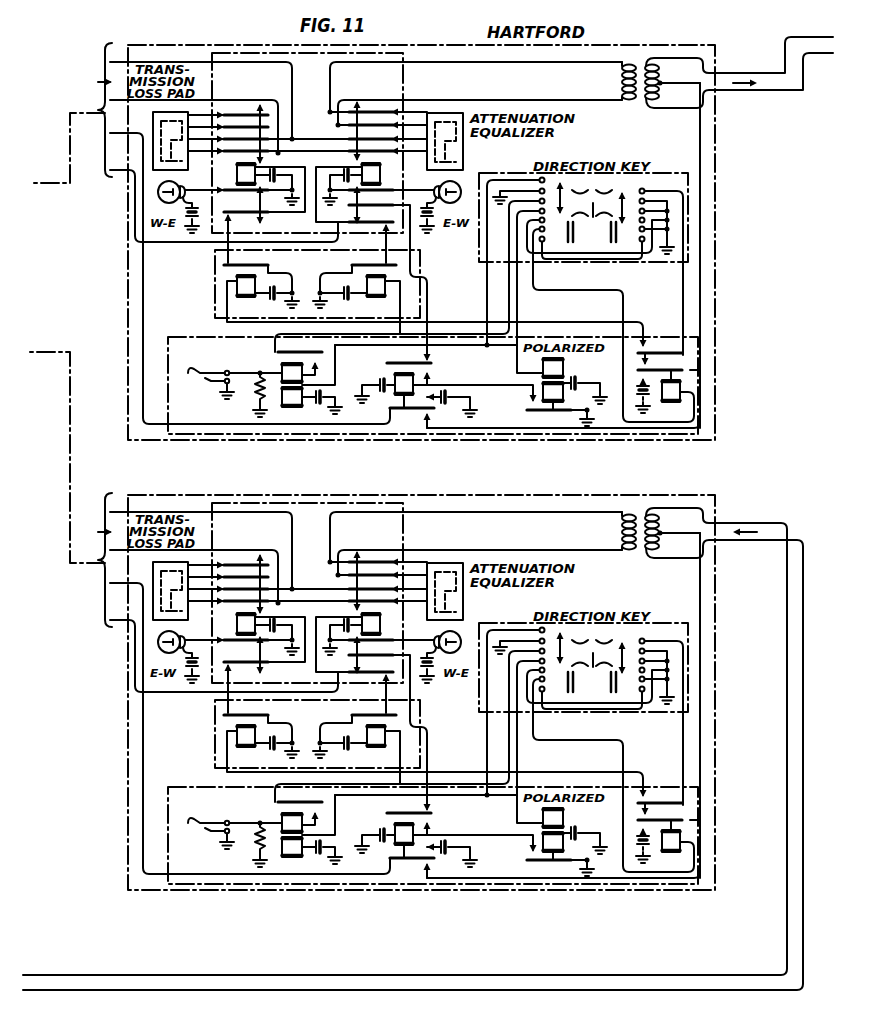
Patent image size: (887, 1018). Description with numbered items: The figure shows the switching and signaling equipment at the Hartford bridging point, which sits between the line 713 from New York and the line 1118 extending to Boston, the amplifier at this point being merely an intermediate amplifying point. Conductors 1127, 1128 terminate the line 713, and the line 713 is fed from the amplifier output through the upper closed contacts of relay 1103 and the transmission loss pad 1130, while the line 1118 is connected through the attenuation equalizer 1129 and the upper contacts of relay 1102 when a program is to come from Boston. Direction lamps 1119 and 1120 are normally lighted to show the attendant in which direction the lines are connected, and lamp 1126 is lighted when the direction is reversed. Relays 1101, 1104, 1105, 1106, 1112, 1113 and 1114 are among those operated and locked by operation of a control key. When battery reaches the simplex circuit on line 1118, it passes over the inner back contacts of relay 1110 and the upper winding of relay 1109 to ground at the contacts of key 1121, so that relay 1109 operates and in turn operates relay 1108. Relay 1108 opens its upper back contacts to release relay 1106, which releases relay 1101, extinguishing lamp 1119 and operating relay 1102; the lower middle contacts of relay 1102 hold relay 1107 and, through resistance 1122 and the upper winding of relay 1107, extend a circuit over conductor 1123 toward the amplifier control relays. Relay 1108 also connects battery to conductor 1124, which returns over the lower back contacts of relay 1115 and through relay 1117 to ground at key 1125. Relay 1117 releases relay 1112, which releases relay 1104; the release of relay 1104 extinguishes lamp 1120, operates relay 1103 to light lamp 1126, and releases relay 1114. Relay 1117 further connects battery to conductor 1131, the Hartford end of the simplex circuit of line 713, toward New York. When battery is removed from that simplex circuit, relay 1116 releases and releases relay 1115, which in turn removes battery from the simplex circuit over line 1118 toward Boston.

The line 713 is at (772, 531).
The relay 1101 is at (240, 170).
The relay 1102 is at (378, 170).
The relay 1103 is at (240, 620).
The relay 1104 is at (378, 620).
The relay 1105 is at (246, 293).
The relay 1106 is at (376, 293).
The relay 1107 is at (282, 366).
The relay 1108 is at (395, 378).
The relay 1109 is at (553, 398).
The relay 1110 is at (664, 398).
The relay 1112 is at (246, 743).
The relay 1113 is at (376, 743).
The relay 1114 is at (282, 816).
The relay 1115 is at (395, 828).
The relay 1116 is at (543, 840).
The relay 1117 is at (664, 848).
The line 1118 is at (782, 85).
The direction lamp 1119 is at (158, 193).
The direction lamp 1120 is at (464, 634).
The key 1121 is at (592, 210).
The resistance 1122 is at (255, 396).
The conductor 1123 is at (157, 243).
The conductor 1124 is at (143, 308).
The key 1125 is at (592, 660).
The direction lamp 1126 is at (158, 645).
The conductor 1127 is at (213, 506).
The conductor 1128 is at (262, 552).
The attenuation equalizer 1129 is at (465, 162).
The transmission loss pad 1130 is at (190, 563).
The conductor 1131 is at (700, 577).